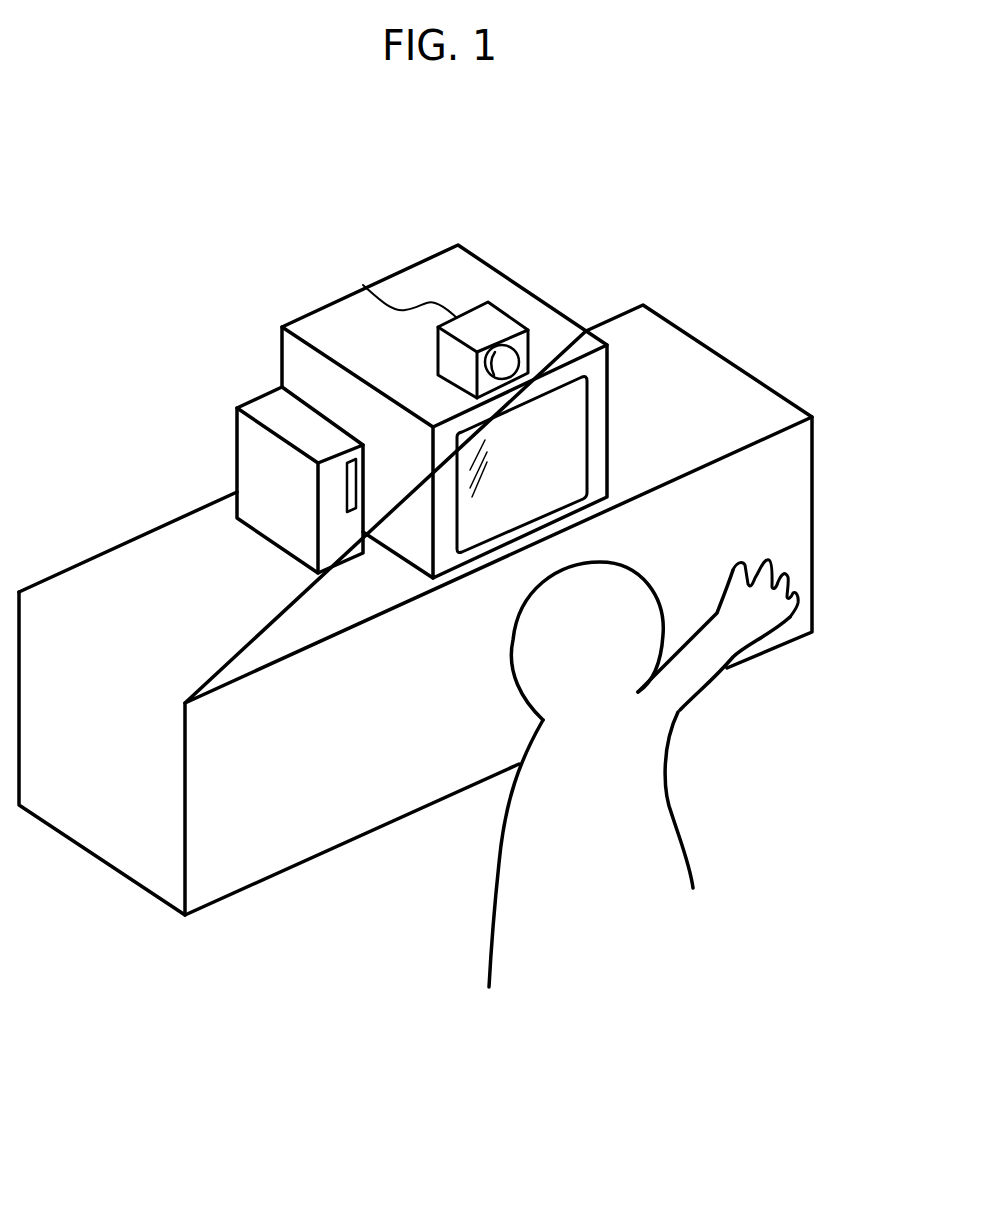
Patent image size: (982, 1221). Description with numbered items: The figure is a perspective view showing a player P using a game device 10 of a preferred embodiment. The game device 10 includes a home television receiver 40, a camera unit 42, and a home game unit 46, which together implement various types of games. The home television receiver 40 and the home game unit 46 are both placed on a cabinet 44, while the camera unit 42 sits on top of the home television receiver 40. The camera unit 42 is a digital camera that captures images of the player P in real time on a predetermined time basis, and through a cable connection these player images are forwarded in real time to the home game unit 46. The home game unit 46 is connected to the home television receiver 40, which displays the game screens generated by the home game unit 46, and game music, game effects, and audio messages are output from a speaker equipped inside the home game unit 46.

The game device 10 is at (247, 288).
The home television receiver 40 is at (281, 355).
The camera unit 42 is at (507, 313).
The cabinet 44 is at (733, 362).
The home game unit 46 is at (237, 430).
The player P is at (699, 790).